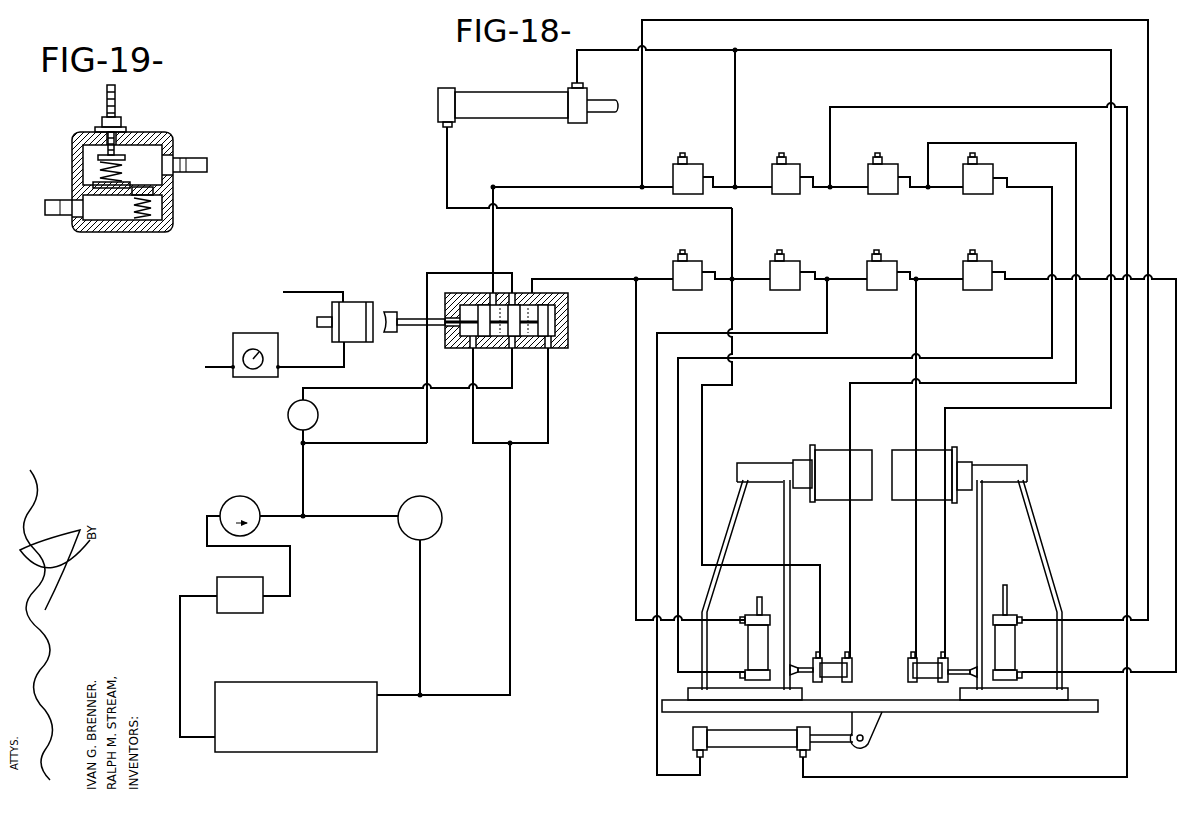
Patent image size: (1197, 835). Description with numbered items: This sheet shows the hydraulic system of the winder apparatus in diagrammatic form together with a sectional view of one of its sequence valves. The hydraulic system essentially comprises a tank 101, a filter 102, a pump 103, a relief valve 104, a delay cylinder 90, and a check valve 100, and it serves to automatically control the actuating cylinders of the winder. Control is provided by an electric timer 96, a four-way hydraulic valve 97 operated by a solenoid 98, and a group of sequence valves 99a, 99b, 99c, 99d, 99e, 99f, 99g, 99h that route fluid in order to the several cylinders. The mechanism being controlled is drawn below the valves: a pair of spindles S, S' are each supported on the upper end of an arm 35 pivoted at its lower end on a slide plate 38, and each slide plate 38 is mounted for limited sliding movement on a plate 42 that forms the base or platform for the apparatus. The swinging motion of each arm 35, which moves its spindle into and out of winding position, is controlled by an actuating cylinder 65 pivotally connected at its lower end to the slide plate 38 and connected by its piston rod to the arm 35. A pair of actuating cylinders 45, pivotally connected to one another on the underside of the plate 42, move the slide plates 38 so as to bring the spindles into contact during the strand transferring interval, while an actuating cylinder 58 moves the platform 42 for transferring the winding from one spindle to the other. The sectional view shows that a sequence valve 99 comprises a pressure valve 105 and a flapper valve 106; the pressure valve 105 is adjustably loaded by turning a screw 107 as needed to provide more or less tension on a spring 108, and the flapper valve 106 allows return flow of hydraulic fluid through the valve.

In FIG. 18, the delay cylinder 90 is at (478, 118).
In FIG. 18, the sequence valve 99a is at (703, 156).
In FIG. 18, the sequence valve 99b is at (800, 156).
In FIG. 18, the sequence valve 99c is at (898, 156).
In FIG. 18, the sequence valve 99d is at (976, 172).
In FIG. 18, the sequence valve 99e is at (698, 252).
In FIG. 18, the sequence valve 99f is at (788, 270).
In FIG. 18, the sequence valve 99g is at (883, 270).
In FIG. 18, the sequence valve 99h is at (992, 252).
In FIG. 18, the solenoid 98 is at (360, 302).
In FIG. 18, the four-way hydraulic valve 97 is at (552, 348).
In FIG. 18, the electric timer 96 is at (253, 377).
In FIG. 18, the check valve 100 is at (293, 426).
In FIG. 18, the pump 103 is at (258, 488).
In FIG. 18, the relief valve 104 is at (420, 482).
In FIG. 18, the filter 102 is at (258, 613).
In FIG. 18, the tank 101 is at (370, 667).
In FIG. 18, the spindle S is at (804, 488).
In FIG. 18, the spindle S' is at (959, 491).
In FIG. 18, the arm 35 is at (745, 498).
In FIG. 18, the actuating cylinder 65 is at (748, 642).
In FIG. 18, the actuating cylinder 45 is at (913, 660).
In FIG. 18, the slide plate 38 is at (690, 693).
In FIG. 18, the plate 42 is at (937, 705).
In FIG. 18, the actuating cylinder 58 is at (775, 748).
In FIG. 19, the sequence valve 99 is at (165, 230).
In FIG. 19, the screw 107 is at (118, 106).
In FIG. 19, the spring 108 is at (100, 157).
In FIG. 19, the pressure valve 105 is at (95, 186).
In FIG. 19, the flapper valve 106 is at (158, 193).